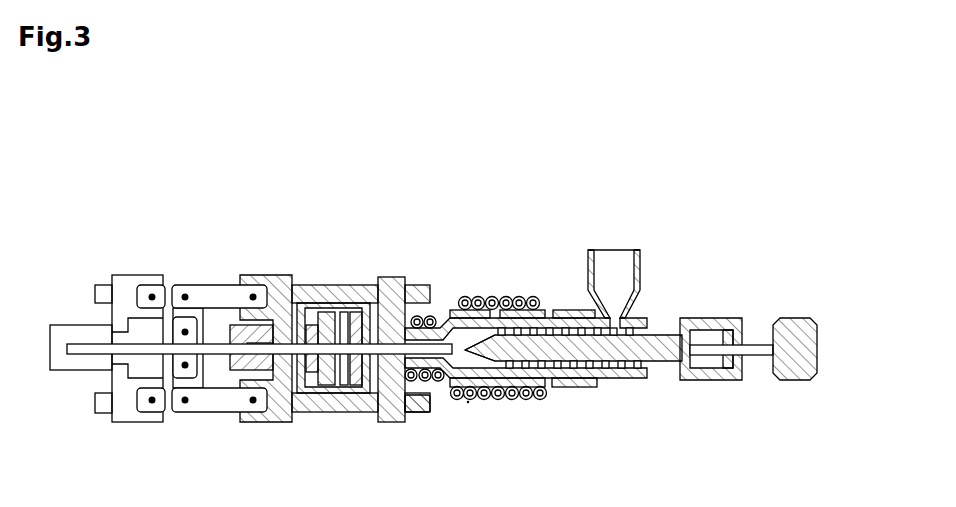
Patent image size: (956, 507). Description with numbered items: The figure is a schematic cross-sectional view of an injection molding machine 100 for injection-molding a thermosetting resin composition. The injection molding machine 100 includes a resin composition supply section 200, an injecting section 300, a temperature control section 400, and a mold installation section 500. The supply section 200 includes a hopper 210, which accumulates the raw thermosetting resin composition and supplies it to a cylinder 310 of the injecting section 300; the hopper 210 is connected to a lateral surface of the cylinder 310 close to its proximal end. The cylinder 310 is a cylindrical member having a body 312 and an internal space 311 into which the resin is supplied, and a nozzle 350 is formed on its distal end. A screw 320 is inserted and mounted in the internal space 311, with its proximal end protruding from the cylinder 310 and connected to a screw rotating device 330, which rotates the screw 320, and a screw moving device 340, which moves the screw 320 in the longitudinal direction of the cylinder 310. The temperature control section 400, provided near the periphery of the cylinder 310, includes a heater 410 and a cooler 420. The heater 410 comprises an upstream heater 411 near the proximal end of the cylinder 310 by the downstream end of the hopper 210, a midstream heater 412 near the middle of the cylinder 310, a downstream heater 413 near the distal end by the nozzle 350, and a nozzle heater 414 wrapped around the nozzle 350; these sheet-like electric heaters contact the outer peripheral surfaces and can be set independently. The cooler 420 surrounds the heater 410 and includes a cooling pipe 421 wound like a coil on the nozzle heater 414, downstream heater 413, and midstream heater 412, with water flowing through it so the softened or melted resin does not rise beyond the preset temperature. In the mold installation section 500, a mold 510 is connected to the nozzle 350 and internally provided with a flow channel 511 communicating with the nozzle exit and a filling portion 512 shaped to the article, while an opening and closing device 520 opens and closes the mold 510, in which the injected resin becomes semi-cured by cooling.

The injection molding machine 100 is at (774, 173).
The resin composition supply section 200 is at (651, 244).
The hopper 210 is at (628, 273).
The injecting section 300 is at (773, 284).
The cylinder 310 is at (648, 320).
The internal space 311 is at (474, 352).
The body 312 is at (610, 380).
The screw 320 is at (655, 362).
The screw rotating device 330 is at (787, 380).
The screw moving device 340 is at (712, 368).
The nozzle 350 is at (425, 317).
The temperature control section 400 is at (524, 246).
The heater 410 is at (558, 306).
The upstream heater 411 is at (576, 388).
The midstream heater 412 is at (531, 400).
The downstream heater 413 is at (468, 401).
The nozzle heater 414 is at (423, 413).
The cooler 420 is at (486, 290).
The cooling pipe 421 is at (459, 297).
The mold installation section 500 is at (374, 212).
The mold 510 is at (342, 393).
The flow channel 511 is at (355, 306).
The filling portion 512 is at (333, 310).
The opening and closing device 520 is at (218, 420).